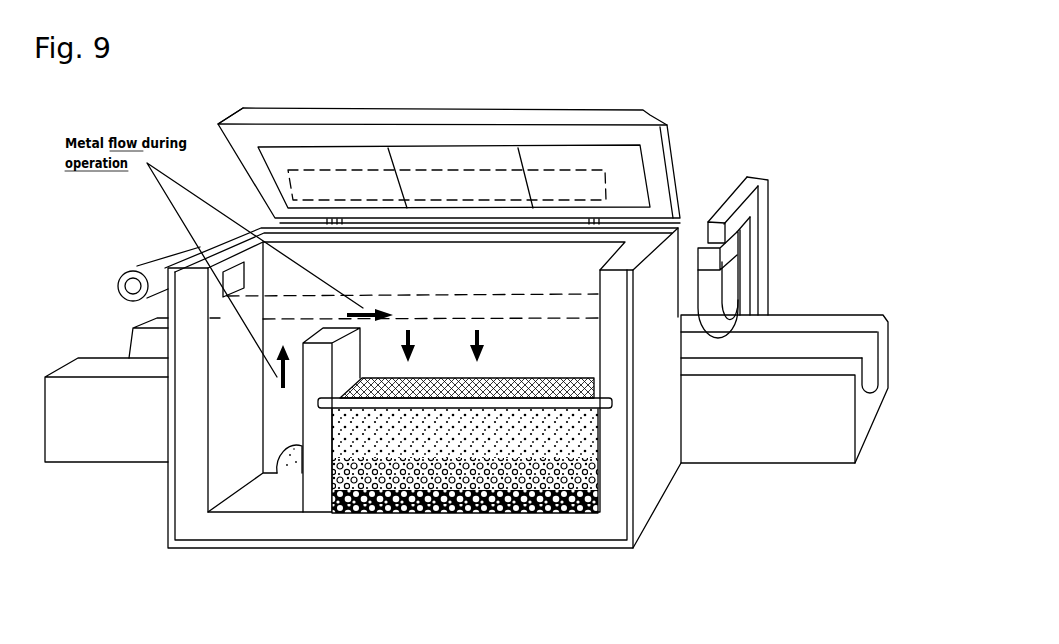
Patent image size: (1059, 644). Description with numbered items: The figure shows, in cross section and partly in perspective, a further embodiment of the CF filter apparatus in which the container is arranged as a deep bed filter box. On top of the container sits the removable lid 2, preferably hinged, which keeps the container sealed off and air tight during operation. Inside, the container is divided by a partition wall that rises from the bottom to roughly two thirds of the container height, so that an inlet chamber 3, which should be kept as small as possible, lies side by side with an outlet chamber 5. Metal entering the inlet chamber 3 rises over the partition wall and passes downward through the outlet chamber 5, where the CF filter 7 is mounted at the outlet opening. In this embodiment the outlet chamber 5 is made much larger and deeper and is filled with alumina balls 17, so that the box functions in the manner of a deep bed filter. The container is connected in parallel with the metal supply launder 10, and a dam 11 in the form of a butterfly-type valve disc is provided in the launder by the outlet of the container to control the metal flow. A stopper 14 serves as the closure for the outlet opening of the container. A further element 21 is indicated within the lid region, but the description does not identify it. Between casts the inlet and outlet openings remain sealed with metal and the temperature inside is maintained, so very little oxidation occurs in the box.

The removable lid 2 is at (647, 172).
The inlet chamber 3 is at (289, 486).
The outlet chamber 5 is at (362, 515).
The CF filter 7 is at (530, 395).
The metal supply launder 10 is at (798, 351).
The dam 11 is at (722, 278).
The stopper 14 is at (157, 273).
The Al2O3 balls 17 is at (460, 515).
The heating element 21 is at (457, 183).